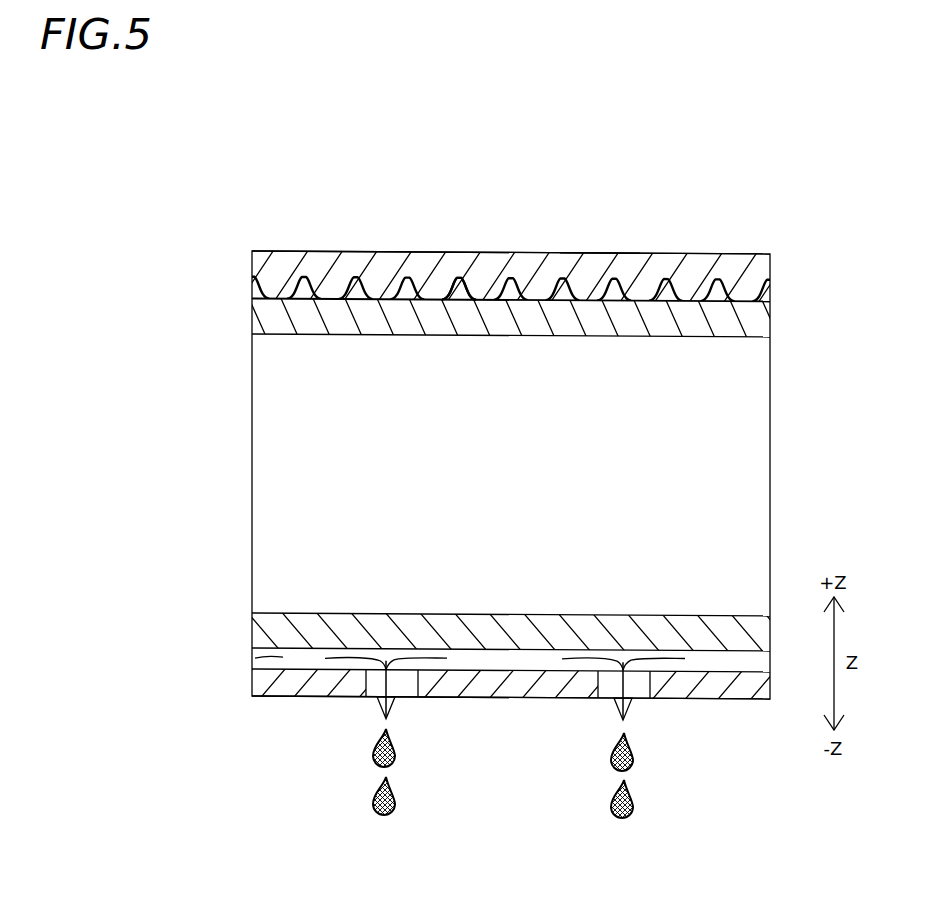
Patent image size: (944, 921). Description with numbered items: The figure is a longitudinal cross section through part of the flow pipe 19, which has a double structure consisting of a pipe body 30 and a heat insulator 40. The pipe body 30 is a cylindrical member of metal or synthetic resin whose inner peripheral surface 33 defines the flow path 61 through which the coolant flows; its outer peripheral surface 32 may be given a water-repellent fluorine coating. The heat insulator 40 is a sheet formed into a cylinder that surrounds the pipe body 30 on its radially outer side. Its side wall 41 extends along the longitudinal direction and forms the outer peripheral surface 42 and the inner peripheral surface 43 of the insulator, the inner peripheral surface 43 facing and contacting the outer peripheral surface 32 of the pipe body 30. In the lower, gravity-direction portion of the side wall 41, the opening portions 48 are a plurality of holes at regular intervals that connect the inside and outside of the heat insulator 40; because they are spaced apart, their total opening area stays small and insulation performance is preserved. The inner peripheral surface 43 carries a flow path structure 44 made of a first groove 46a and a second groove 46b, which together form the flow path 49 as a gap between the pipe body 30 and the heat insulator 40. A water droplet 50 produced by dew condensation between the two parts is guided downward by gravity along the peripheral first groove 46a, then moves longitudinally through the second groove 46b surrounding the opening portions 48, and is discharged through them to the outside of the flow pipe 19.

The flow pipe 19 is at (788, 210).
The pipe body 30 is at (782, 310).
The outer peripheral surface 32 is at (457, 297).
The inner peripheral surface 33 is at (297, 335).
The heat insulator 40 is at (640, 244).
The side wall 41 is at (332, 272).
The outer peripheral surface 42 is at (585, 258).
The inner peripheral surface 43 is at (485, 300).
The flow path structure 44 is at (518, 483).
The first groove 46a is at (357, 284).
The second groove 46b is at (512, 661).
The opening portions 48 is at (365, 672).
The flow path 49 is at (508, 298).
The water droplet 50 is at (400, 755).
The flow path 61 is at (497, 463).